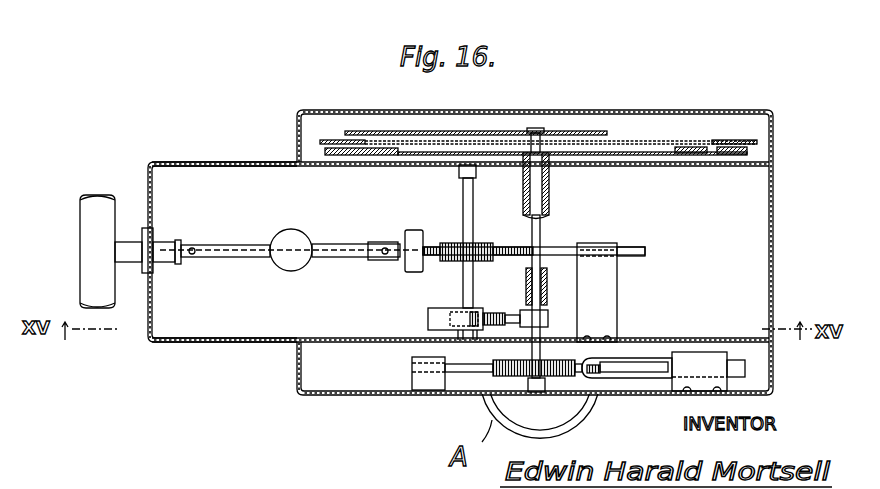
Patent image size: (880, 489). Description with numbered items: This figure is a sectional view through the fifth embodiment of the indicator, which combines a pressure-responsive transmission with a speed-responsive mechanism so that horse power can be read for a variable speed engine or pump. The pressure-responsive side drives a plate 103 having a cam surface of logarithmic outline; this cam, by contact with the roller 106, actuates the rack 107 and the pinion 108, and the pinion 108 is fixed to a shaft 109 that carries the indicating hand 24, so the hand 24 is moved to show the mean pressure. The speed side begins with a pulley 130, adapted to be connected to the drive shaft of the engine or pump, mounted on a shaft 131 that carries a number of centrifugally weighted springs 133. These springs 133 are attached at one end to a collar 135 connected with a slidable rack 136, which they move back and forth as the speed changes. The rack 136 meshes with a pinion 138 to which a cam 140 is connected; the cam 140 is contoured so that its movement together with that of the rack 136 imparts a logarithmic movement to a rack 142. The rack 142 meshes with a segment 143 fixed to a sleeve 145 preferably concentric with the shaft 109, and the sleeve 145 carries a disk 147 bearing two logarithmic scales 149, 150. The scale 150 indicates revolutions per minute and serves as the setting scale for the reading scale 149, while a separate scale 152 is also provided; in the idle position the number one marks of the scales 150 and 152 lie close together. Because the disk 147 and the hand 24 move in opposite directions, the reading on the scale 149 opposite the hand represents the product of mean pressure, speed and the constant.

The indicating hand 24 is at (448, 132).
The plate 103 is at (610, 374).
The roller 106 is at (588, 376).
The rack 107 is at (490, 376).
The pinion 108 is at (523, 373).
The shaft 109 is at (546, 200).
The pulley 130 is at (88, 239).
The shaft 131 is at (178, 247).
The centrifugally weighted springs 133 is at (238, 252).
The collar 135 is at (412, 240).
The slidable rack 136 is at (634, 249).
The pinion 138 is at (456, 248).
The cam 140 is at (432, 292).
The rack 142 is at (476, 310).
The segment 143 is at (491, 314).
The sleeve 145 is at (541, 238).
The disk 147 is at (630, 152).
The logarithmic scale 149 is at (690, 148).
The logarithmic scale 150 is at (733, 150).
The separate scale 152 is at (328, 140).